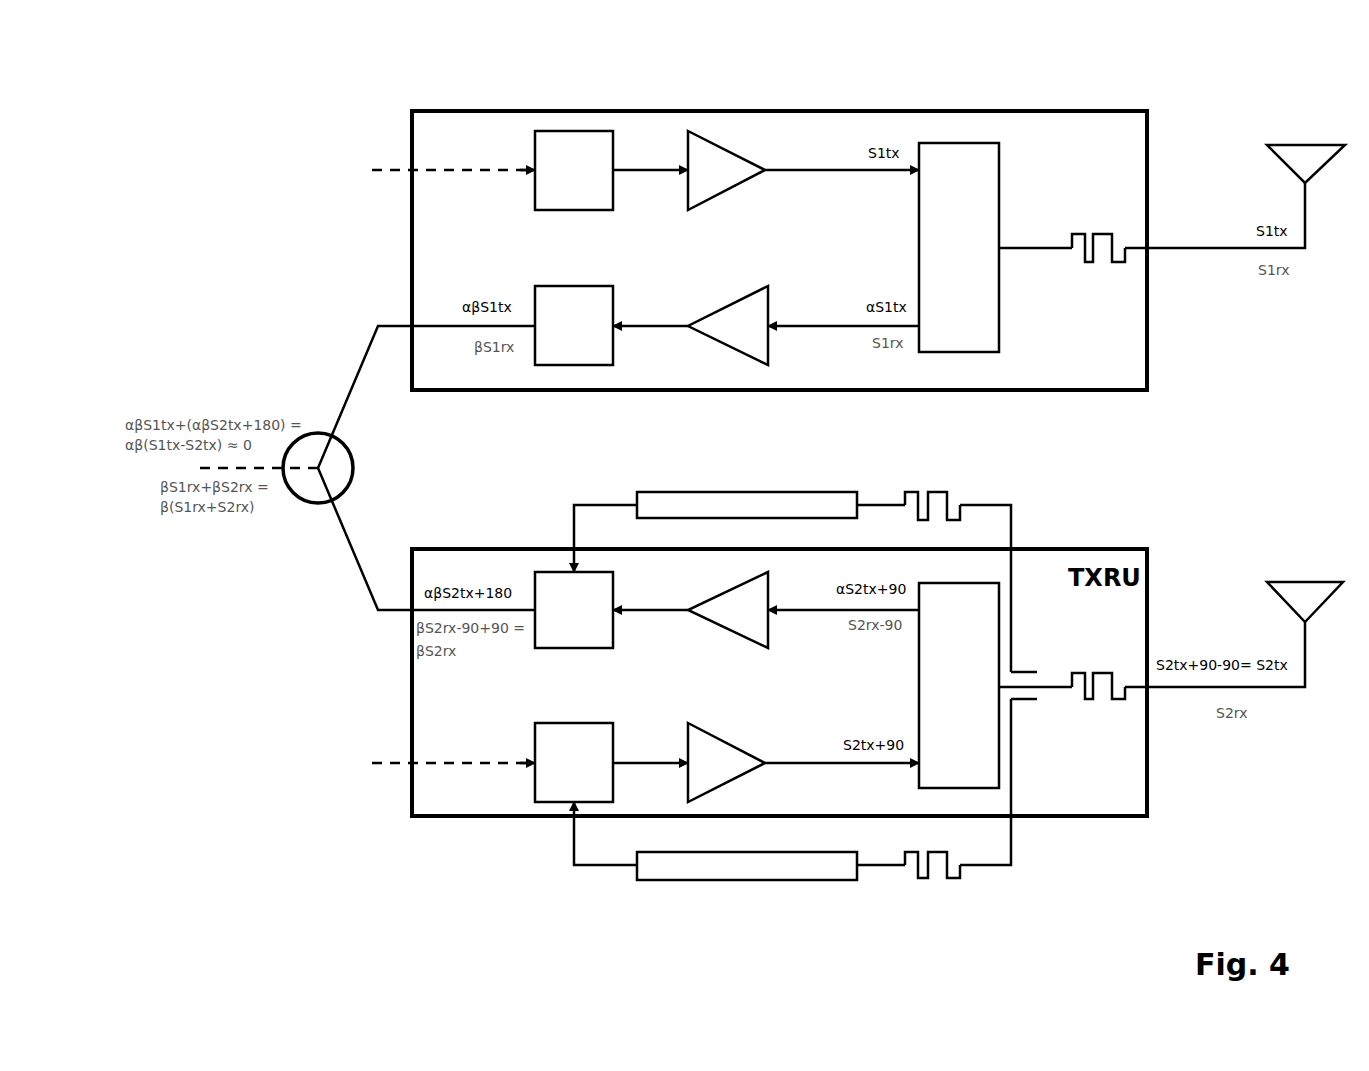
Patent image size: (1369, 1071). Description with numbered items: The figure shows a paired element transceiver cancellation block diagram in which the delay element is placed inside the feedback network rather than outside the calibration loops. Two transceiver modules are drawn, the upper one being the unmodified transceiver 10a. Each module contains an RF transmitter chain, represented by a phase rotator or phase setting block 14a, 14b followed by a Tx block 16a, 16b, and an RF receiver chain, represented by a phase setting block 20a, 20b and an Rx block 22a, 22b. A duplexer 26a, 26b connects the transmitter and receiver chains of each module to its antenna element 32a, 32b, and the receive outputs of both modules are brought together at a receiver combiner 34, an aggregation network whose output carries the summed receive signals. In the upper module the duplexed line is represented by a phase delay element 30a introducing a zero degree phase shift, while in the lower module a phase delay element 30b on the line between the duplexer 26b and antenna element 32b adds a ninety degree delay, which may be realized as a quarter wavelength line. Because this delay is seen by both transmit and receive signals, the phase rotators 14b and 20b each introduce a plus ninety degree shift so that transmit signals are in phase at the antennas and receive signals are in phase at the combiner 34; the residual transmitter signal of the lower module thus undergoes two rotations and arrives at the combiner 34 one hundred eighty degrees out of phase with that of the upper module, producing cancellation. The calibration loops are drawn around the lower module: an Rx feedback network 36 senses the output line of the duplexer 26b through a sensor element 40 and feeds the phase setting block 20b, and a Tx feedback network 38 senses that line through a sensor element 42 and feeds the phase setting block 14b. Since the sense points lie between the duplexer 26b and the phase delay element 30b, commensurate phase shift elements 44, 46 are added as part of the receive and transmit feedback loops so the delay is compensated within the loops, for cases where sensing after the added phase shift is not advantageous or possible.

The transceiver (TXRU) module 10a is at (779, 250).
The phase rotator or phase setting block 14a is at (613, 131).
The phase rotator or phase setting block 14b is at (538, 797).
The Tx block 16a is at (727, 150).
The Tx block 16b is at (688, 782).
The phase rotator or phase setting block 20a is at (613, 363).
The phase rotator or phase setting block 20b is at (537, 572).
The Rx block 22a is at (763, 363).
The Rx block 22b is at (728, 587).
The duplexer 26a is at (959, 247).
The duplexer 26b is at (959, 685).
The phase delay element 30a is at (1125, 262).
The phase delay element 30b is at (1125, 699).
The antenna element 32a is at (1267, 145).
The antenna element 32b is at (1267, 582).
The receiver combiner 34 is at (353, 450).
The Rx feedback network 36 is at (702, 492).
The Tx feedback network 38 is at (717, 878).
The sensor element 40 is at (1027, 672).
The sensor element 42 is at (1027, 699).
The phase shift element 44 is at (960, 502).
The phase shift element 46 is at (960, 873).